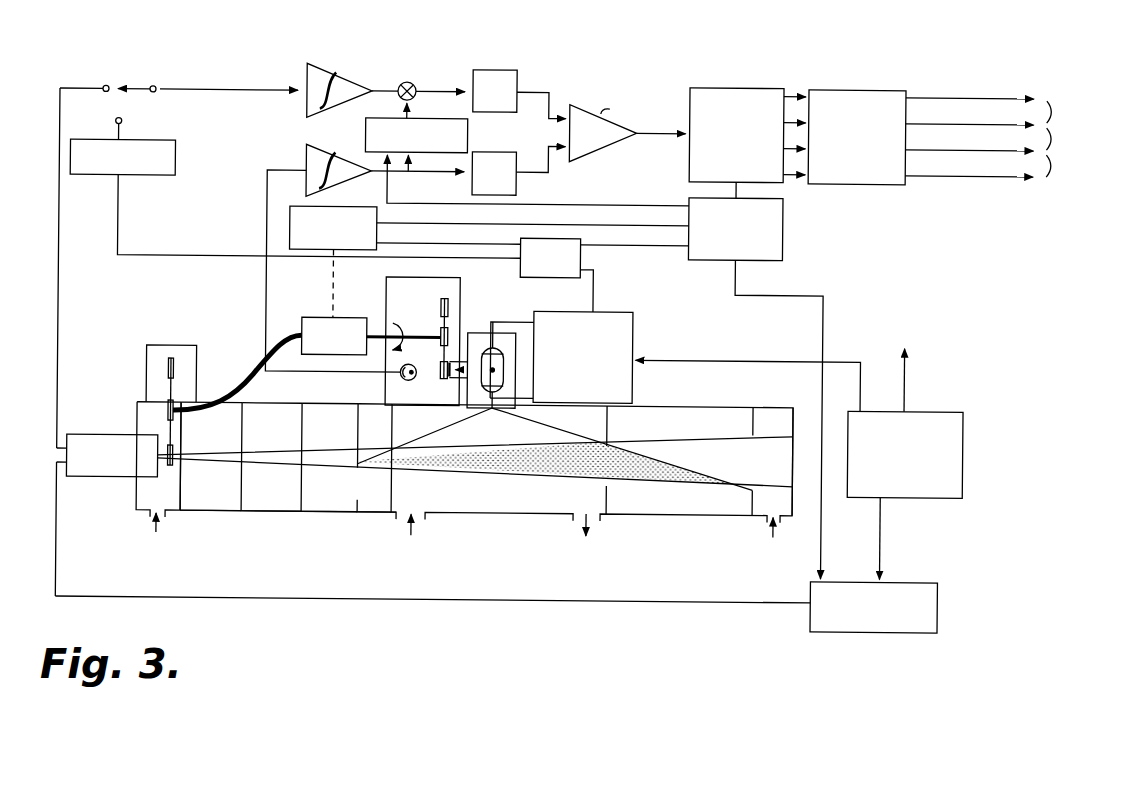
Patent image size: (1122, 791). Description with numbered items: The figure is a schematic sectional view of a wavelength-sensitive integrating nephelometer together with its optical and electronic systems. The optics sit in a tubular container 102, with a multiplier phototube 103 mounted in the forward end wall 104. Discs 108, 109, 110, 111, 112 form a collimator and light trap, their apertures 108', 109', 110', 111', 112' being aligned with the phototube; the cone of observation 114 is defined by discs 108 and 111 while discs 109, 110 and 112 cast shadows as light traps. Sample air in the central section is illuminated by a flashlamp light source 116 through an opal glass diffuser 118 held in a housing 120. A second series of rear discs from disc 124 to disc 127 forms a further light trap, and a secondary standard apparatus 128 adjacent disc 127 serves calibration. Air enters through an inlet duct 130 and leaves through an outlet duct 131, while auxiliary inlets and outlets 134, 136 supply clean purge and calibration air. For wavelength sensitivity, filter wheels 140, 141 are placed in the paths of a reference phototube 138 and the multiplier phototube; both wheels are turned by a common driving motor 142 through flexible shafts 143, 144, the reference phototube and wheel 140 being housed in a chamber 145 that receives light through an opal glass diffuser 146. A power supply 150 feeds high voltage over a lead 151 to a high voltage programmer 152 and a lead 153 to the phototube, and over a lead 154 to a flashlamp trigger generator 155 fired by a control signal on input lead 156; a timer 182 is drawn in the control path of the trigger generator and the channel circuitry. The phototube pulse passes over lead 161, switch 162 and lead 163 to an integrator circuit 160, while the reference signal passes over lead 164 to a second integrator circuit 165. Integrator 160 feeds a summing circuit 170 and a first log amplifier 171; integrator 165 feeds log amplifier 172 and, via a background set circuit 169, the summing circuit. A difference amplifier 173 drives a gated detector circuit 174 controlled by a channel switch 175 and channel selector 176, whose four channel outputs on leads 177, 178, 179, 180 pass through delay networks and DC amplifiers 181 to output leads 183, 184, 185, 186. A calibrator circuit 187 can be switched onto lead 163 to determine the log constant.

The tubular container 102 is at (729, 381).
The multiplier phototube 103 is at (104, 431).
The forward end wall 104 is at (140, 492).
The disc 108 is at (211, 469).
The aperture 108' is at (211, 426).
The disc 109 is at (270, 470).
The aperture 109' is at (272, 427).
The disc 110 is at (324, 470).
The aperture 110' is at (330, 429).
The disc 111 is at (364, 476).
The aperture 111' is at (379, 428).
The disc 112 is at (383, 476).
The aperture 112' is at (429, 430).
The cone of observation 114 is at (529, 441).
The light source 116 is at (516, 318).
The opal glass diffuser 118 is at (497, 405).
The housing 120 is at (507, 328).
The disc 124 is at (613, 428).
The disc 127 is at (756, 423).
The secondary standard apparatus 128 is at (782, 438).
The inlet duct 130 is at (428, 534).
The outlet duct 131 is at (600, 535).
The auxiliary inlet and outlet 134 is at (168, 528).
The auxiliary inlet and outlet 136 is at (768, 532).
The reference phototube 138 is at (411, 377).
The filter wheel 140 is at (443, 312).
The filter wheel 141 is at (177, 366).
The driving motor 142 is at (307, 315).
The flexible shaft 143 is at (248, 382).
The flexible shaft 144 is at (380, 328).
The chamber 145 is at (463, 273).
The opal glass diffuser 146 is at (464, 362).
The power supply 150 is at (969, 433).
The lead 151 is at (885, 521).
The high voltage programmer 152 is at (934, 575).
The lead 153 is at (331, 597).
The lead 154 is at (715, 355).
The flashlamp trigger generator 155 is at (635, 325).
The input lead 156 is at (596, 282).
The integrator circuit 160 is at (341, 68).
The lead 161 is at (60, 121).
The switch 162 is at (131, 81).
The lead 163 is at (208, 87).
The lead 164 is at (268, 205).
The second integrator circuit 165 is at (347, 131).
The background set circuit 169 is at (447, 115).
The summing circuit 170 is at (408, 78).
The first log amplifier 171 is at (497, 66).
The log amplifier 172 is at (498, 148).
The difference amplifier 173 is at (604, 144).
The gated detector circuit 174 is at (734, 82).
The channel switch 175 is at (366, 204).
The channel selector 176 is at (784, 226).
The lead 177 is at (797, 89).
The lead 178 is at (802, 111).
The lead 179 is at (801, 138).
The lead 180 is at (793, 171).
The delay networks and DC amplifiers 181 is at (877, 83).
The timer 182 is at (582, 256).
The lead 183 is at (1037, 90).
The lead 184 is at (1052, 118).
The lead 185 is at (1052, 146).
The lead 186 is at (1035, 171).
The calibrator circuit 187 is at (176, 146).